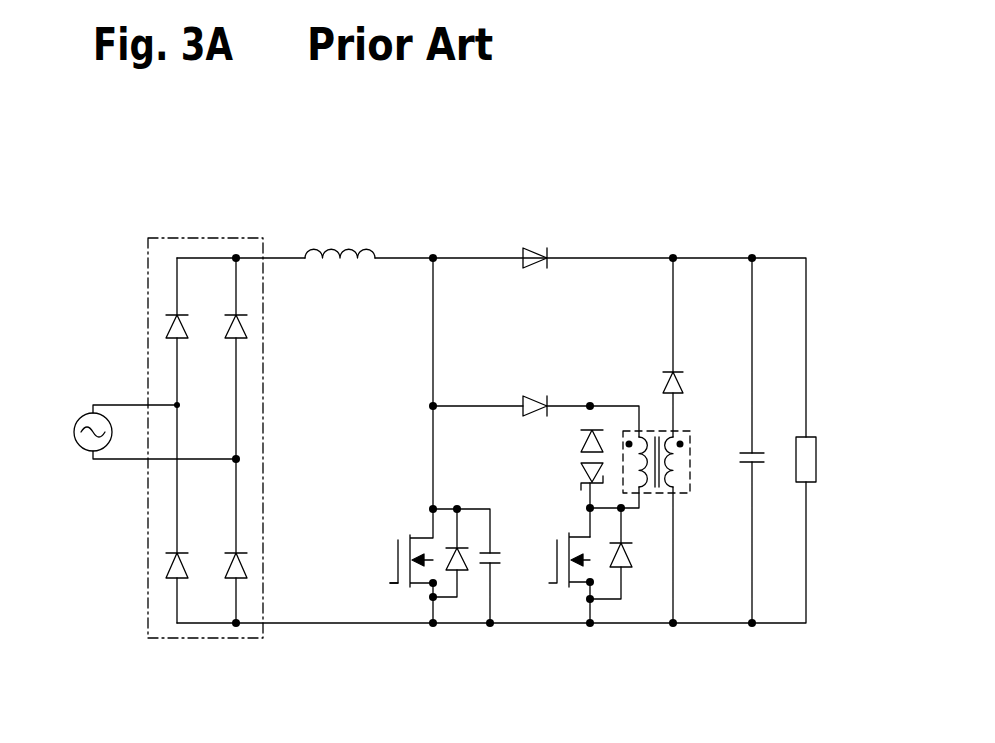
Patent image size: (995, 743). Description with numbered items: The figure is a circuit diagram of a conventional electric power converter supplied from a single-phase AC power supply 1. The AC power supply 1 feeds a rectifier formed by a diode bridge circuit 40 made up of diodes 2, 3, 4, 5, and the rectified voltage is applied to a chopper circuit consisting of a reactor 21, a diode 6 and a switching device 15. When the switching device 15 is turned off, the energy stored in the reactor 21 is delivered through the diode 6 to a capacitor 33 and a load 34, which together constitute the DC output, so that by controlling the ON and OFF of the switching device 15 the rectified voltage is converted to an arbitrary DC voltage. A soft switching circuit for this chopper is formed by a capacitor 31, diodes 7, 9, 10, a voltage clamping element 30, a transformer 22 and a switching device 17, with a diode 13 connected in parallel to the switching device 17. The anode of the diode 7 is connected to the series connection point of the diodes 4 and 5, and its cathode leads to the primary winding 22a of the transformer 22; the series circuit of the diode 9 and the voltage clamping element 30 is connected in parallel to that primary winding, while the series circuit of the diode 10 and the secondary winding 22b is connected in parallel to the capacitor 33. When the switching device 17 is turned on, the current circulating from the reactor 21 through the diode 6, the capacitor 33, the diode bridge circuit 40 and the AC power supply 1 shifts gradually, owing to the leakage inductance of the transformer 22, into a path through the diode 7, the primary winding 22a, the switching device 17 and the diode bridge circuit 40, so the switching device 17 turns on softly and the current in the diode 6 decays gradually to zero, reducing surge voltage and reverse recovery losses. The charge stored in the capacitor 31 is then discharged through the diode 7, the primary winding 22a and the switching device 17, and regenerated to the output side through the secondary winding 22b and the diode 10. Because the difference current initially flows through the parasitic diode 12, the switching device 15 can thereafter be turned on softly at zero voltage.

The AC power supply 1 is at (64, 430).
The diode 2 is at (156, 326).
The diode 3 is at (158, 566).
The diode 4 is at (256, 330).
The diode 5 is at (250, 568).
The diode bridge circuit 40 is at (264, 419).
The reactor 21 is at (345, 246).
The diode 6 is at (539, 242).
The diode 7 is at (534, 396).
The diode 9 is at (573, 440).
The voltage clamping element 30 is at (585, 486).
The diode 10 is at (664, 372).
The transformer 22 is at (680, 431).
The primary winding 22a is at (636, 454).
The secondary winding 22b is at (680, 454).
The parasitic diode 12 is at (448, 528).
The switching device 15 is at (390, 566).
The capacitor 31 is at (498, 558).
The diode 13 is at (632, 552).
The switching device 17 is at (596, 580).
The capacitor 33 is at (770, 473).
The load 34 is at (822, 478).